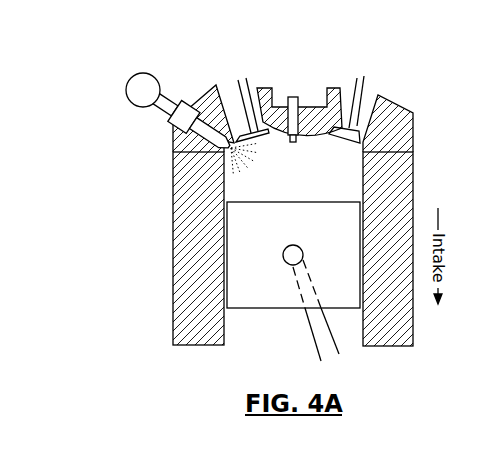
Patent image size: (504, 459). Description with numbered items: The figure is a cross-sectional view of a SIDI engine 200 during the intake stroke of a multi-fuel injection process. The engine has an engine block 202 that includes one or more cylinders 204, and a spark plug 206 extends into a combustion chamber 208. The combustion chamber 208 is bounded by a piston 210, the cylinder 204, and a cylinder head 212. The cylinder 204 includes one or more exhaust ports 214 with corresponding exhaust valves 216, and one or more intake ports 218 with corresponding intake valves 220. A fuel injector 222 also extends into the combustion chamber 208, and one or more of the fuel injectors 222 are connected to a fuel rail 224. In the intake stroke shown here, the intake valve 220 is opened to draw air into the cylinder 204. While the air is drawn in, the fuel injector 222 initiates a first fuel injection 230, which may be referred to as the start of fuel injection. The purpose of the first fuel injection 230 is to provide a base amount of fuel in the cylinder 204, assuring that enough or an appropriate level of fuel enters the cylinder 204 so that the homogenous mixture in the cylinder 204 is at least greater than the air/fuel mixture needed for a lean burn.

The SIDI engine 200 is at (408, 52).
The engine block 202 is at (173, 248).
The cylinder 204 is at (365, 177).
The spark plug 206 is at (293, 97).
The combustion chamber 208 is at (307, 184).
The piston 210 is at (283, 308).
The cylinder head 212 is at (173, 141).
The exhaust port 214 is at (368, 93).
The exhaust valve 216 is at (352, 98).
The intake port 218 is at (227, 86).
The intake valve 220 is at (247, 100).
The fuel injector 222 is at (163, 117).
The fuel rail 224 is at (139, 73).
The first fuel injection 230 is at (208, 146).